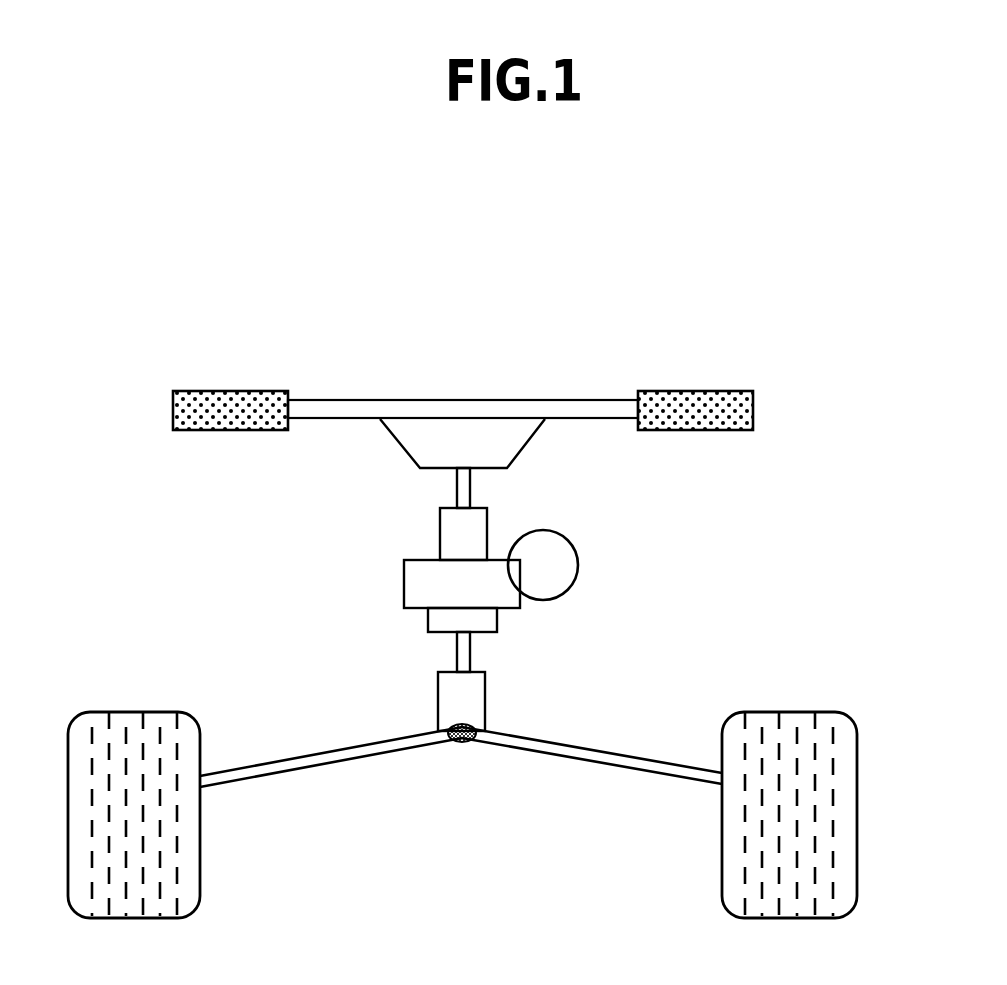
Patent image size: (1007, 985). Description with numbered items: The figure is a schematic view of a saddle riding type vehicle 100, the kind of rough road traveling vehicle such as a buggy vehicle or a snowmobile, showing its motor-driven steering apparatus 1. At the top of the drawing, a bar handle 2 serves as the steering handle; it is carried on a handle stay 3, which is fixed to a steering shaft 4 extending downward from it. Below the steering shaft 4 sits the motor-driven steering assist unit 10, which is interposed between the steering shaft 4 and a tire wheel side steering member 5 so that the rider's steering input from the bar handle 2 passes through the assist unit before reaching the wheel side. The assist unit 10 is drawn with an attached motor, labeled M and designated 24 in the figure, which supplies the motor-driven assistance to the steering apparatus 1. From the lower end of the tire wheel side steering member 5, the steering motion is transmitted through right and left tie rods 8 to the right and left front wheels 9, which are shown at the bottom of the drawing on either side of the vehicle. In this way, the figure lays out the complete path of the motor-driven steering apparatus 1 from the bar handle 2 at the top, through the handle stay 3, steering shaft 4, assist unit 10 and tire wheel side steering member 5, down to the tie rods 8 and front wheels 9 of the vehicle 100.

The saddle riding type vehicle 100 is at (122, 308).
The motor-driven steering apparatus 1 is at (230, 352).
The bar handle 2 is at (697, 392).
The handle stay 3 is at (408, 437).
The steering shaft 4 is at (471, 487).
The motor-driven steering assist unit 10 is at (396, 578).
The motor 24 is at (575, 553).
The tire wheel side steering member 5 is at (471, 651).
The tie rods 8 is at (575, 760).
The front wheels 9 is at (857, 810).